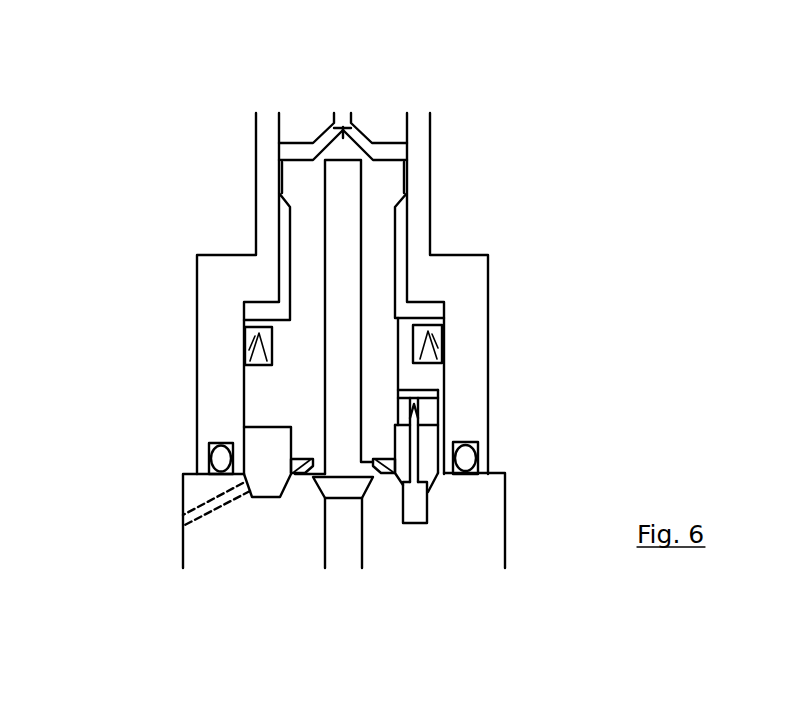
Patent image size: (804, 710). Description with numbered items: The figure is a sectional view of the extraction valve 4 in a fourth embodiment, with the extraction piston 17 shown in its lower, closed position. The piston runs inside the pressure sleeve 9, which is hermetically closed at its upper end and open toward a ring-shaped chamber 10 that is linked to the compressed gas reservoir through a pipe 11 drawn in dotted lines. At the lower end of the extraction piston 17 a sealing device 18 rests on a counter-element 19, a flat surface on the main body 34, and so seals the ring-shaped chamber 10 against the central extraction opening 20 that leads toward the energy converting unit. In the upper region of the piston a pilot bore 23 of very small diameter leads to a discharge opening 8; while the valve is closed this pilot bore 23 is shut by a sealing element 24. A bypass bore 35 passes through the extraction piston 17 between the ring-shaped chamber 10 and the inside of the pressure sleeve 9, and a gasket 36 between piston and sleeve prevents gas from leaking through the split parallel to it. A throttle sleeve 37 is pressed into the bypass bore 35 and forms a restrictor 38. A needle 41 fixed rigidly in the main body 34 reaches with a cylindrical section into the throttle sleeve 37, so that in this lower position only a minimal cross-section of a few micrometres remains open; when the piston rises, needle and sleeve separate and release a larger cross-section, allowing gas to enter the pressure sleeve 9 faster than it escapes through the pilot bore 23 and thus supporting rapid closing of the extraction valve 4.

The extraction valve 4 is at (192, 200).
The discharge opening 8 is at (337, 208).
The pressure sleeve 9 is at (216, 282).
The ring-shaped chamber 10 is at (265, 460).
The pipe 11 is at (183, 520).
The extraction piston 17 is at (385, 247).
The sealing device 18 is at (395, 455).
The counter-element 19 is at (378, 477).
The central extraction opening 20 is at (347, 547).
The pilot bore 23 is at (348, 132).
The sealing element 24 is at (345, 120).
The main body 34 is at (273, 547).
The bypass bore 35 is at (403, 347).
The gasket 36 is at (247, 334).
The throttle sleeve 37 is at (430, 416).
The restrictor 38 is at (432, 402).
The needle 41 is at (417, 468).